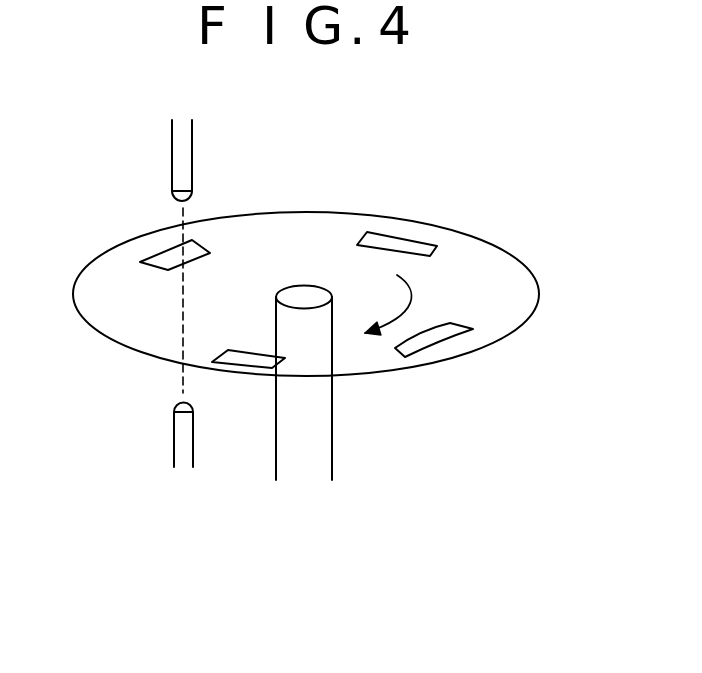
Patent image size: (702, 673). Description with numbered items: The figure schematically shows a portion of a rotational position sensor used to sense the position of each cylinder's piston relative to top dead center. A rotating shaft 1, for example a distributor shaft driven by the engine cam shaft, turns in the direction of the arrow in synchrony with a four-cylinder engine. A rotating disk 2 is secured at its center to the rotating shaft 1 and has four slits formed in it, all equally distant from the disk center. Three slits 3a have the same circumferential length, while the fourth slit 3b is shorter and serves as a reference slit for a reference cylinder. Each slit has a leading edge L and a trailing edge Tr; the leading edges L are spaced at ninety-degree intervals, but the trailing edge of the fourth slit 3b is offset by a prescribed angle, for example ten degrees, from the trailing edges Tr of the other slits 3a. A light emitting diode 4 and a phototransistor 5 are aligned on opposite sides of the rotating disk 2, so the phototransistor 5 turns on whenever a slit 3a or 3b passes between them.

The rotating shaft 1 is at (318, 430).
The rotating disk 2 is at (497, 263).
The slits 3a is at (408, 236).
The fourth slit 3b is at (160, 256).
The light emitting diode 4 is at (187, 157).
The phototransistor 5 is at (173, 438).
The trailing edge Tr is at (362, 233).
The leading edge L is at (433, 246).